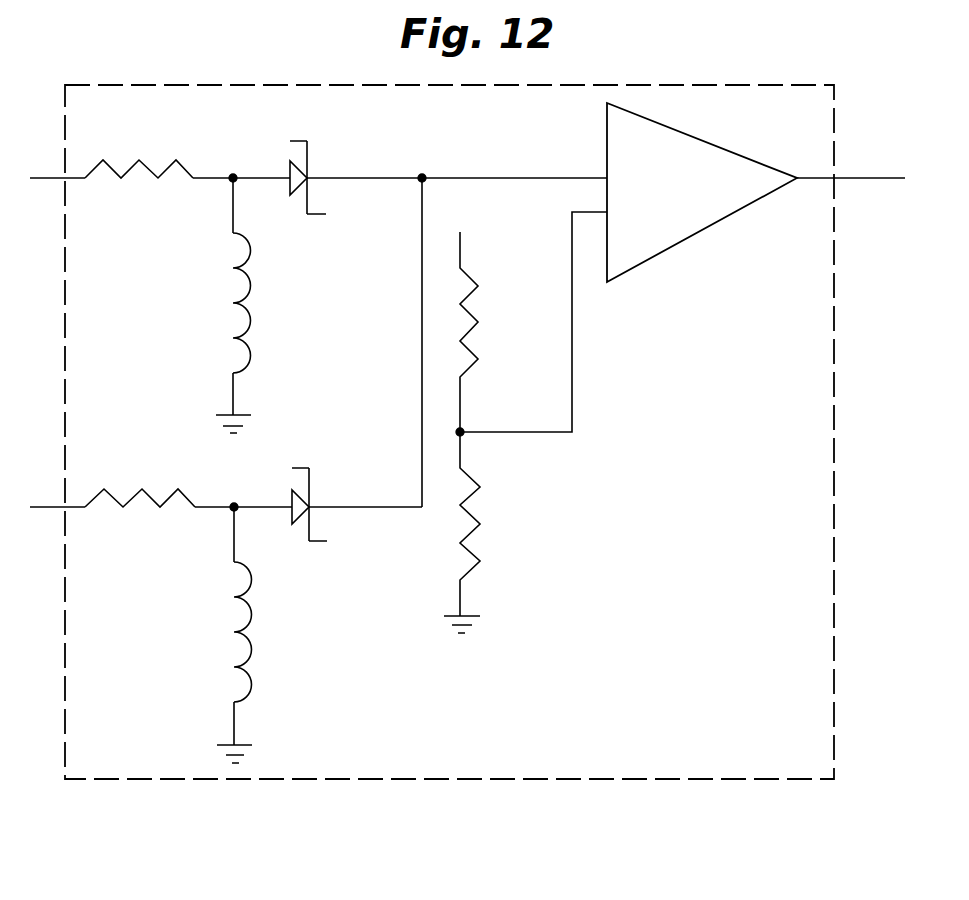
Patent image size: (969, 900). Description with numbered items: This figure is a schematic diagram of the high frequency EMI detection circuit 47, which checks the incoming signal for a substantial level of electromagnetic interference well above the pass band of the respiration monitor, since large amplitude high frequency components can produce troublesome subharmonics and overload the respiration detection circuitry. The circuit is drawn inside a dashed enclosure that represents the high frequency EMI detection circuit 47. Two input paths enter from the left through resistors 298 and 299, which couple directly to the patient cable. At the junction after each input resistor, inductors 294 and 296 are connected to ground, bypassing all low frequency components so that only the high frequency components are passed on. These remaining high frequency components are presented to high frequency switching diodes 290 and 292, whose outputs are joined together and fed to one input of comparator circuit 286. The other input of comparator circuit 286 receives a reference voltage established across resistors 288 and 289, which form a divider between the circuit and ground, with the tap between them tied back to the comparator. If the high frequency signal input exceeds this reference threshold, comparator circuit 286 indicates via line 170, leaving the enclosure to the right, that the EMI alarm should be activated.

The high frequency EMI detection circuit 47 is at (680, 779).
The line 170 is at (890, 178).
The comparator circuit 286 is at (650, 259).
The resistor 288 is at (467, 268).
The resistor 289 is at (467, 548).
The high frequency switching diode 290 is at (309, 150).
The high frequency switching diode 292 is at (311, 485).
The inductor 294 is at (251, 320).
The inductor 296 is at (254, 647).
The resistor 298 is at (145, 166).
The resistor 299 is at (107, 493).